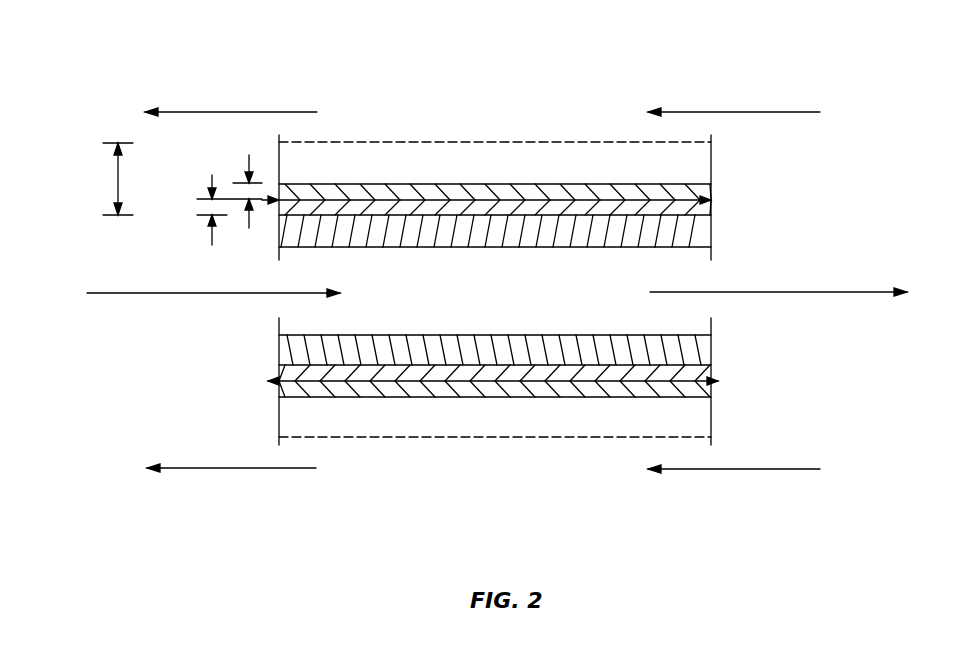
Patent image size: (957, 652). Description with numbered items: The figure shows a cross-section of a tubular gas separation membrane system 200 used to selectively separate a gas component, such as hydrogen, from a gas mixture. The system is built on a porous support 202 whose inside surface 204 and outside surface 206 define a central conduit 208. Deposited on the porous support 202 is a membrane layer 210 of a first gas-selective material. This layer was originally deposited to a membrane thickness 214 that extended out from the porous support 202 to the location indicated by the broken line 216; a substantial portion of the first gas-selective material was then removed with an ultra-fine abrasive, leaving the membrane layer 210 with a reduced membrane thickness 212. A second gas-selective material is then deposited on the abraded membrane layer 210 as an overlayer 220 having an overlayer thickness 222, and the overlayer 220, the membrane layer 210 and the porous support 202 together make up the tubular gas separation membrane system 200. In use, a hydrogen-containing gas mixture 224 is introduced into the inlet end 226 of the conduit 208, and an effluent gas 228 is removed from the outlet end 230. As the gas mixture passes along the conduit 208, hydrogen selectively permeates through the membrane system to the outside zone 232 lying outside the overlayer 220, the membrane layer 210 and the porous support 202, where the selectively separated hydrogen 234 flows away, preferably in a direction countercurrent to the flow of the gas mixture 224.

The tubular gas separation membrane system 200 is at (530, 70).
The porous support 202 is at (695, 242).
The inside surface 204 is at (342, 233).
The outside surface 206 is at (524, 290).
The conduit 208 is at (587, 301).
The membrane layer 210 is at (703, 208).
The reduced membrane thickness 212 is at (200, 208).
The membrane thickness 214 is at (118, 180).
The broken line 216 is at (469, 142).
The overlayer 220 is at (703, 190).
The overlayer thickness 222 is at (237, 190).
The gas mixture 224 is at (195, 293).
The inlet end 226 is at (290, 308).
The effluent gas 228 is at (870, 292).
The outlet end 230 is at (688, 279).
The outside zone 232 is at (605, 119).
The selectively separated hydrogen 234 is at (230, 112).